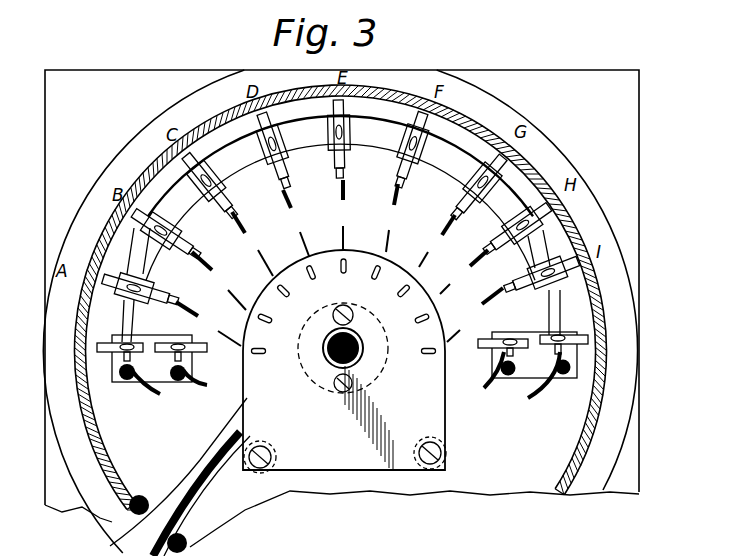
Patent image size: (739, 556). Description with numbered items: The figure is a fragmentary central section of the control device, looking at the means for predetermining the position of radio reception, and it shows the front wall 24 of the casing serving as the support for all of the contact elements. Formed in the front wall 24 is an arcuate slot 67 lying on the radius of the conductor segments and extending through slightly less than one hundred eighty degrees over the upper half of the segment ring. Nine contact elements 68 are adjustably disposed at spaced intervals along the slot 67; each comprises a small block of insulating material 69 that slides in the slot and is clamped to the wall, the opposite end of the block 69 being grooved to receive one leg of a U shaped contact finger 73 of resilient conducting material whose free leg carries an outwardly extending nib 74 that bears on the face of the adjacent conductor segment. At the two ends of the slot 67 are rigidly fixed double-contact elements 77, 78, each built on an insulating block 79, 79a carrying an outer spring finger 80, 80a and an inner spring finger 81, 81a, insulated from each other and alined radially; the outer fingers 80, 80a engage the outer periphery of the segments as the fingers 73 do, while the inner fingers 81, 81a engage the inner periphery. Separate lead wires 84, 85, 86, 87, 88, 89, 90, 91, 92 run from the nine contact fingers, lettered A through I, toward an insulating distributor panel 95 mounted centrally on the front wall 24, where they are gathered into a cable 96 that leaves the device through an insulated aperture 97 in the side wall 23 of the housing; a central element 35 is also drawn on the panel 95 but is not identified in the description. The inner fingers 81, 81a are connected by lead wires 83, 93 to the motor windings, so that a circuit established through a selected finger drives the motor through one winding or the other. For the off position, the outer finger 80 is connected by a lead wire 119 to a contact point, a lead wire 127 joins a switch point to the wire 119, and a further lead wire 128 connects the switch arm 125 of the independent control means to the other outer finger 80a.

The side wall 23 is at (90, 403).
The front wall 24 is at (628, 162).
The shaft 35 is at (331, 362).
The arcuate slot 67 is at (583, 302).
The contact elements 68 is at (250, 123).
The block of insulating material 69 is at (341, 156).
The U shaped contact finger 73 is at (338, 113).
The nib 74 is at (352, 142).
The double-contact element 77 is at (194, 362).
The double-contact element 78 is at (492, 360).
The insulating block 79 is at (175, 385).
The insulating block 79a is at (568, 380).
The outer spring finger 80 is at (98, 335).
The outer spring finger 80a is at (590, 330).
The inner spring finger 81 is at (177, 343).
The inner spring finger 81a is at (512, 339).
The lead wire 83 is at (200, 392).
The lead wire 84 is at (208, 324).
The lead wire 85 is at (219, 281).
The lead wire 86 is at (252, 244).
The lead wire 87 is at (298, 223).
The lead wire 88 is at (342, 215).
The lead wire 89 is at (391, 218).
The lead wire 90 is at (437, 241).
The lead wire 91 is at (464, 272).
The lead wire 92 is at (475, 315).
The lead wire 93 is at (487, 390).
The insulating distributor panel 95 is at (432, 423).
The cable 96 is at (196, 481).
The insulated aperture 97 is at (144, 497).
The lead wire 119 is at (158, 397).
The switch arm 125 is at (398, 553).
The lead wire 127 is at (342, 553).
The lead wire 128 is at (532, 410).